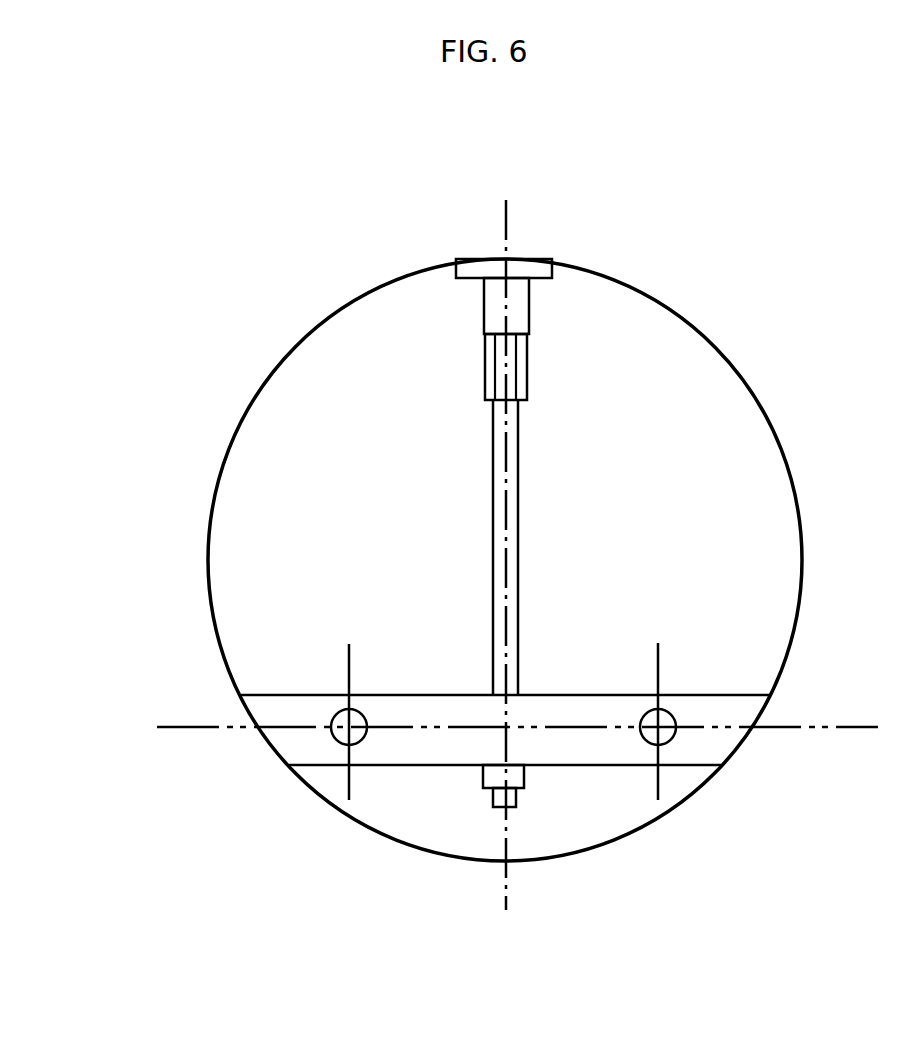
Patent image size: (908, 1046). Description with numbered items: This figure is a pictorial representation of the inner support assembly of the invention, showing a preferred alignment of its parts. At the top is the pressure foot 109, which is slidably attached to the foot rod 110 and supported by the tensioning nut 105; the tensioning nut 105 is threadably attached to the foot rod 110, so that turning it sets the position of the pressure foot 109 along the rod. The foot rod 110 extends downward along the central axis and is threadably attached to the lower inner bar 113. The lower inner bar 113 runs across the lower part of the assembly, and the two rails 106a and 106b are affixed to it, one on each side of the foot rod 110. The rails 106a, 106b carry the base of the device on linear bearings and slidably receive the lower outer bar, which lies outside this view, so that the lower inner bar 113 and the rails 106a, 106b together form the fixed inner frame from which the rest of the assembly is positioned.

The pressure foot 109 is at (420, 234).
The tensioning nut 105 is at (411, 329).
The foot rod 110 is at (366, 512).
The lower inner bar 113 is at (454, 690).
The rail 106a is at (227, 663).
The rail 106b is at (760, 721).